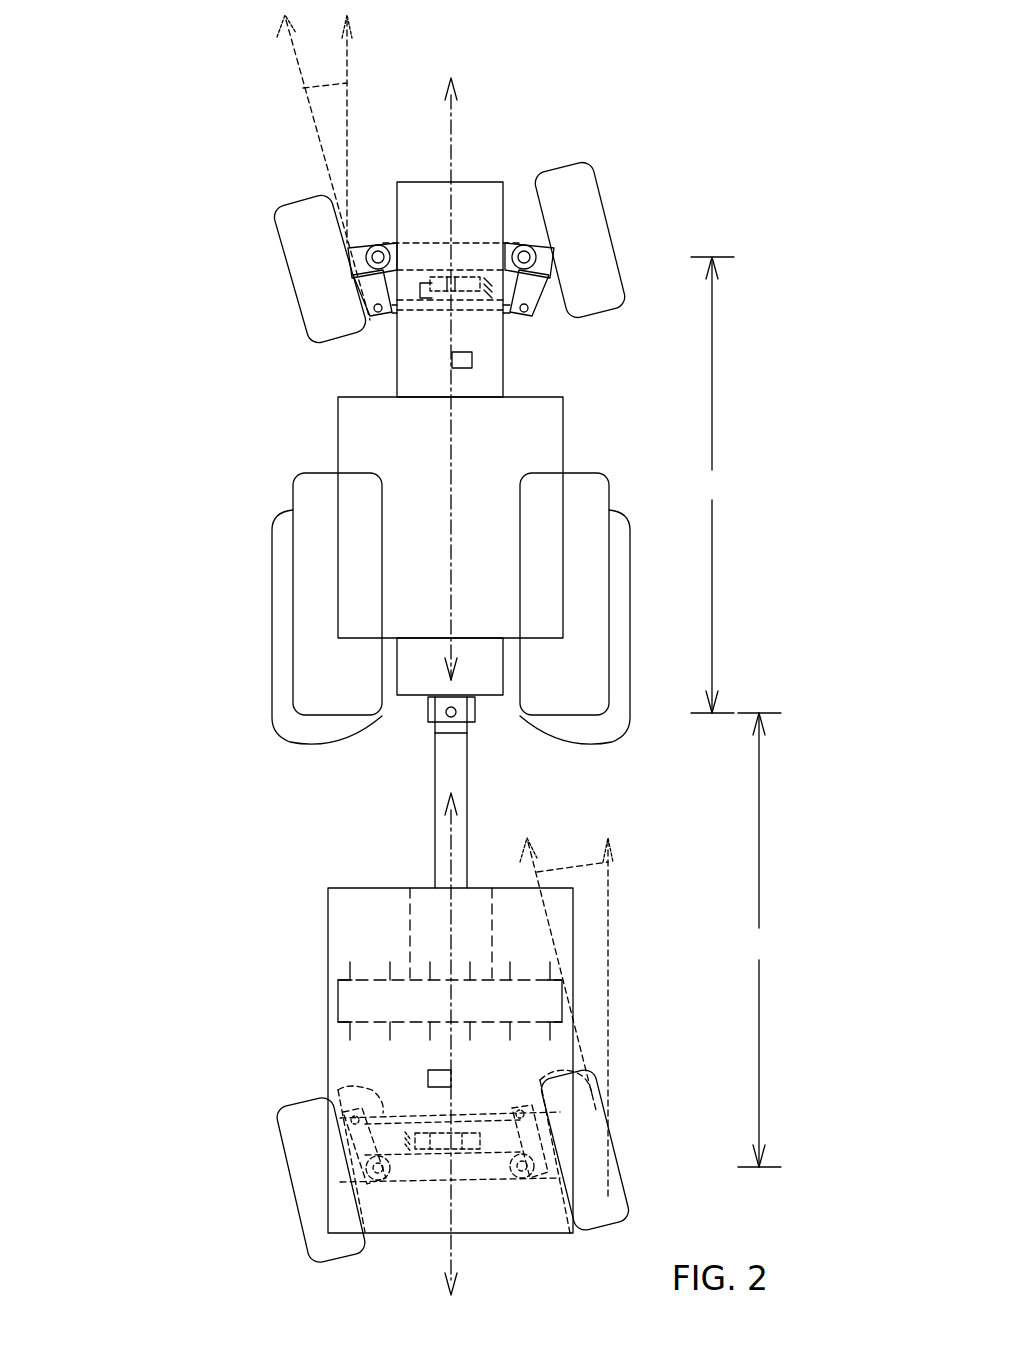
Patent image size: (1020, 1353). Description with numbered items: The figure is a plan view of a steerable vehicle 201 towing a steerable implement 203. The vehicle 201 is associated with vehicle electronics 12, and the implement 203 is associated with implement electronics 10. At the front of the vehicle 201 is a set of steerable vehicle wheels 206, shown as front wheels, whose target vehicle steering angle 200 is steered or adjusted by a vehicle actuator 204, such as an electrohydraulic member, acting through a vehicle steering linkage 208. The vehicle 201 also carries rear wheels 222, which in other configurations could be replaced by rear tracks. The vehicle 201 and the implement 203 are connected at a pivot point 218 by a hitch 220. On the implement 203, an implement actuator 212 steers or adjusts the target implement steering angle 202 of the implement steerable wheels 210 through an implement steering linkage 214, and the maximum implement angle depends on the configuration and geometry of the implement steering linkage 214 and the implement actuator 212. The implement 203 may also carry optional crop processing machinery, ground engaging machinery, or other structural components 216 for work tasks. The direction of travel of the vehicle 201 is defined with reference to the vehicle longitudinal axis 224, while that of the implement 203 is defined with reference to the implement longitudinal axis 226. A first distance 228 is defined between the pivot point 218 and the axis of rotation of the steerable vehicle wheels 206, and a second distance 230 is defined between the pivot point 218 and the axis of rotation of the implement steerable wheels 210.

The implement electronics 10 is at (428, 1078).
The vehicle electronics 12 is at (468, 370).
The target vehicle steering angle 200 is at (330, 84).
The vehicle 201 is at (156, 420).
The target implement steering angle 202 is at (568, 862).
The implement 203 is at (142, 1060).
The vehicle actuator 204 is at (463, 275).
The steerable vehicle wheels 206 is at (297, 228).
The vehicle steering linkage 208 is at (397, 310).
The implement steerable wheels 210 is at (308, 1172).
The implement actuator 212 is at (435, 1170).
The implement steering linkage 214 is at (345, 1095).
The structural components 216 is at (357, 996).
The pivot point 218 is at (456, 712).
The hitch 220 is at (450, 755).
The rear wheels 222 is at (293, 720).
The vehicle longitudinal axis 224 is at (451, 118).
The implement longitudinal axis 226 is at (451, 905).
The first distance 228 is at (712, 485).
The second distance 230 is at (759, 940).